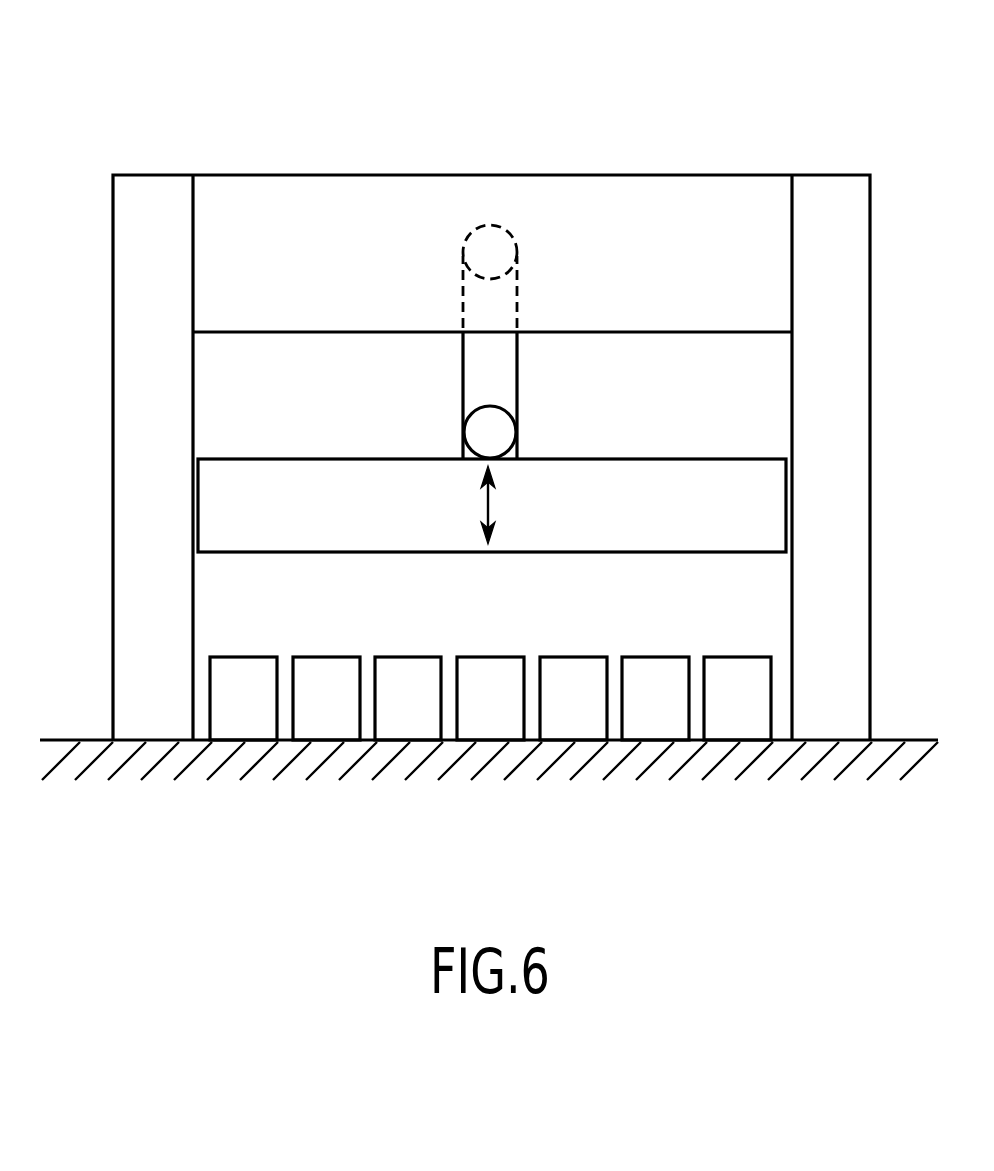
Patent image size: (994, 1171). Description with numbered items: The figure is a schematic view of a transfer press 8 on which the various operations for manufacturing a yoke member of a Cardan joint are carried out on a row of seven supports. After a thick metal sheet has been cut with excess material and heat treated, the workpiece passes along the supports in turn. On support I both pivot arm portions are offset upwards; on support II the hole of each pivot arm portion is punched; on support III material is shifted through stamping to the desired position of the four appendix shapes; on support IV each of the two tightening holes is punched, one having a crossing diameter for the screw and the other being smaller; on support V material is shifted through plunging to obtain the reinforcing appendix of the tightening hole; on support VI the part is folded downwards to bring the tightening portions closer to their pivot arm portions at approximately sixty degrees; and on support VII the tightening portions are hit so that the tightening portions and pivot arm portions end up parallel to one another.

The transfer press 8 is at (718, 142).
The support I is at (243, 698).
The support II is at (326, 698).
The support III is at (408, 698).
The support IV is at (490, 698).
The support V is at (573, 698).
The support VI is at (655, 698).
The support VII is at (737, 698).